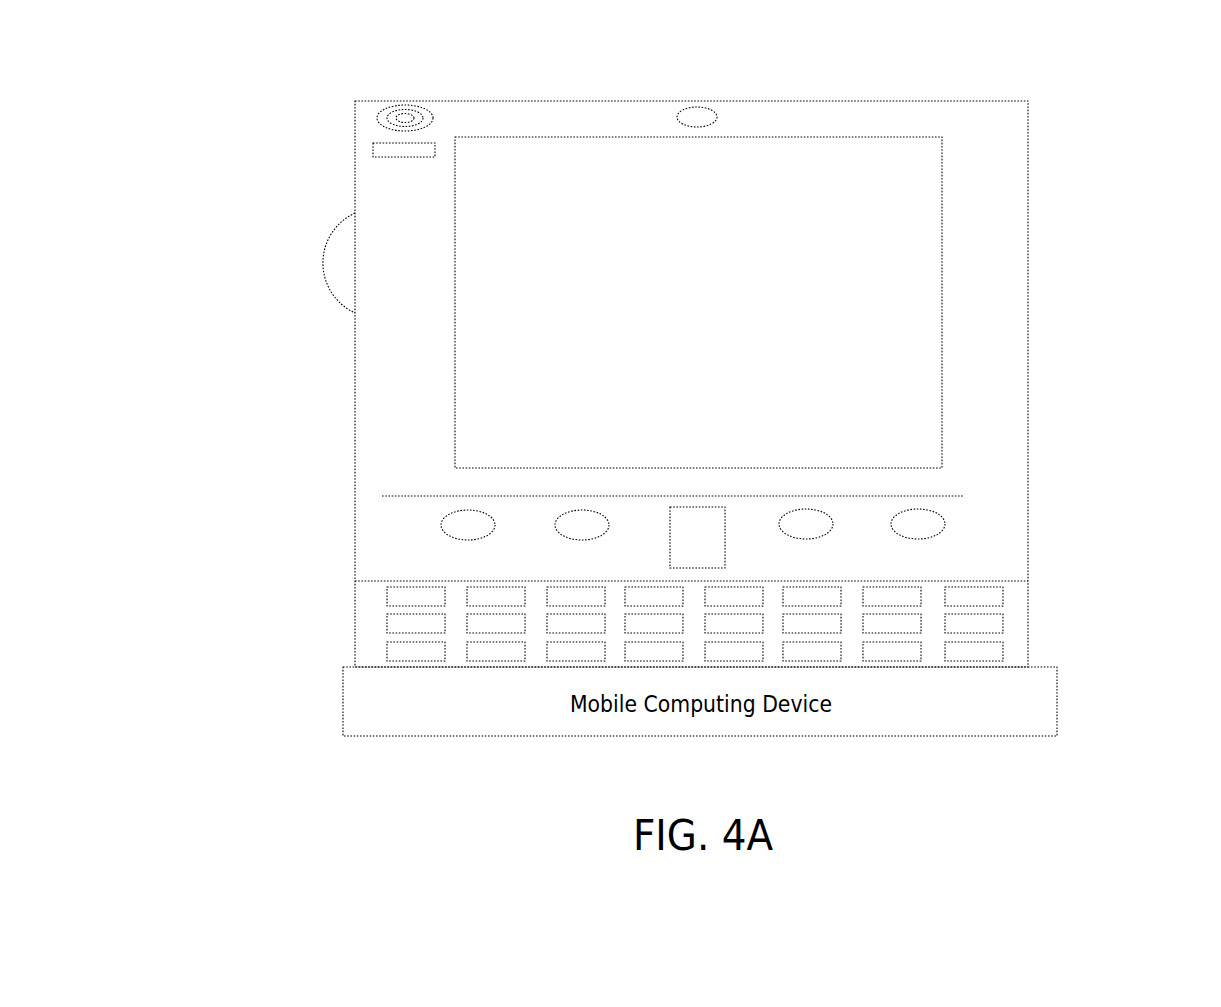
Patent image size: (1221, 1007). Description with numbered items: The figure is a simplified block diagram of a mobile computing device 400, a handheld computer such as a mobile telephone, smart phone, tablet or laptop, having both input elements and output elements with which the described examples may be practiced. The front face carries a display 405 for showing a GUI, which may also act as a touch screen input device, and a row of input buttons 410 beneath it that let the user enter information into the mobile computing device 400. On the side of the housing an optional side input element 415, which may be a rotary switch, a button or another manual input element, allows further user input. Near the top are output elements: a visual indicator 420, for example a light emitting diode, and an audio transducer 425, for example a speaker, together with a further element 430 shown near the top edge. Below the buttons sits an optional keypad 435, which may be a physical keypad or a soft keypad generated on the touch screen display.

The mobile computing device 400 is at (1015, 113).
The display 405 is at (605, 410).
The input buttons 410 is at (695, 542).
The side input element 415 is at (343, 262).
The visual indicator 420 is at (373, 155).
The audio transducer 425 is at (385, 118).
The sensor 430 is at (717, 117).
The keypad 435 is at (367, 660).